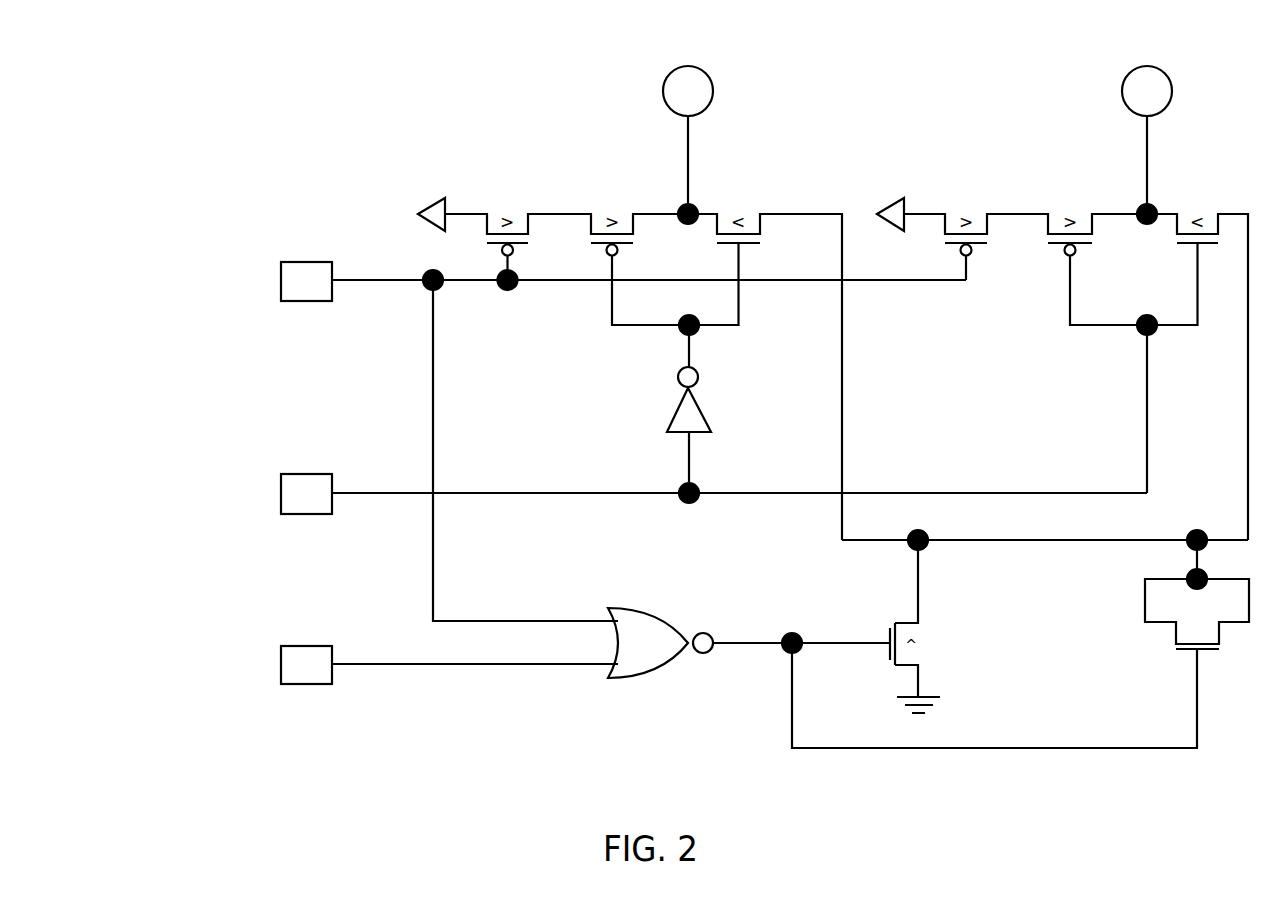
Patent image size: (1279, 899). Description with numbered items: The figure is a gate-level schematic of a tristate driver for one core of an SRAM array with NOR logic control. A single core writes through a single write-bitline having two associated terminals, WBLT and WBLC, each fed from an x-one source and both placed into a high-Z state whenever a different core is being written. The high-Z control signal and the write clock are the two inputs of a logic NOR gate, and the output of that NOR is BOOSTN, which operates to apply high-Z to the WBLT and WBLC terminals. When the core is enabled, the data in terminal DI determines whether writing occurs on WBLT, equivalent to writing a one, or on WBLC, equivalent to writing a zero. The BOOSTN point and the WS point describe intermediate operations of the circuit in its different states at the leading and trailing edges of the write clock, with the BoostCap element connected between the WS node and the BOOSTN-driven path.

The write-bitline true terminal WBLT is at (688, 129).
The write-bitline complement terminal WBLC is at (1147, 129).
The data in terminal DI is at (699, 494).
The NOR output node BOOSTN is at (955, 672).
The intermediate circuit point WS is at (1045, 551).
The boost capacitor BoostCap is at (1160, 616).